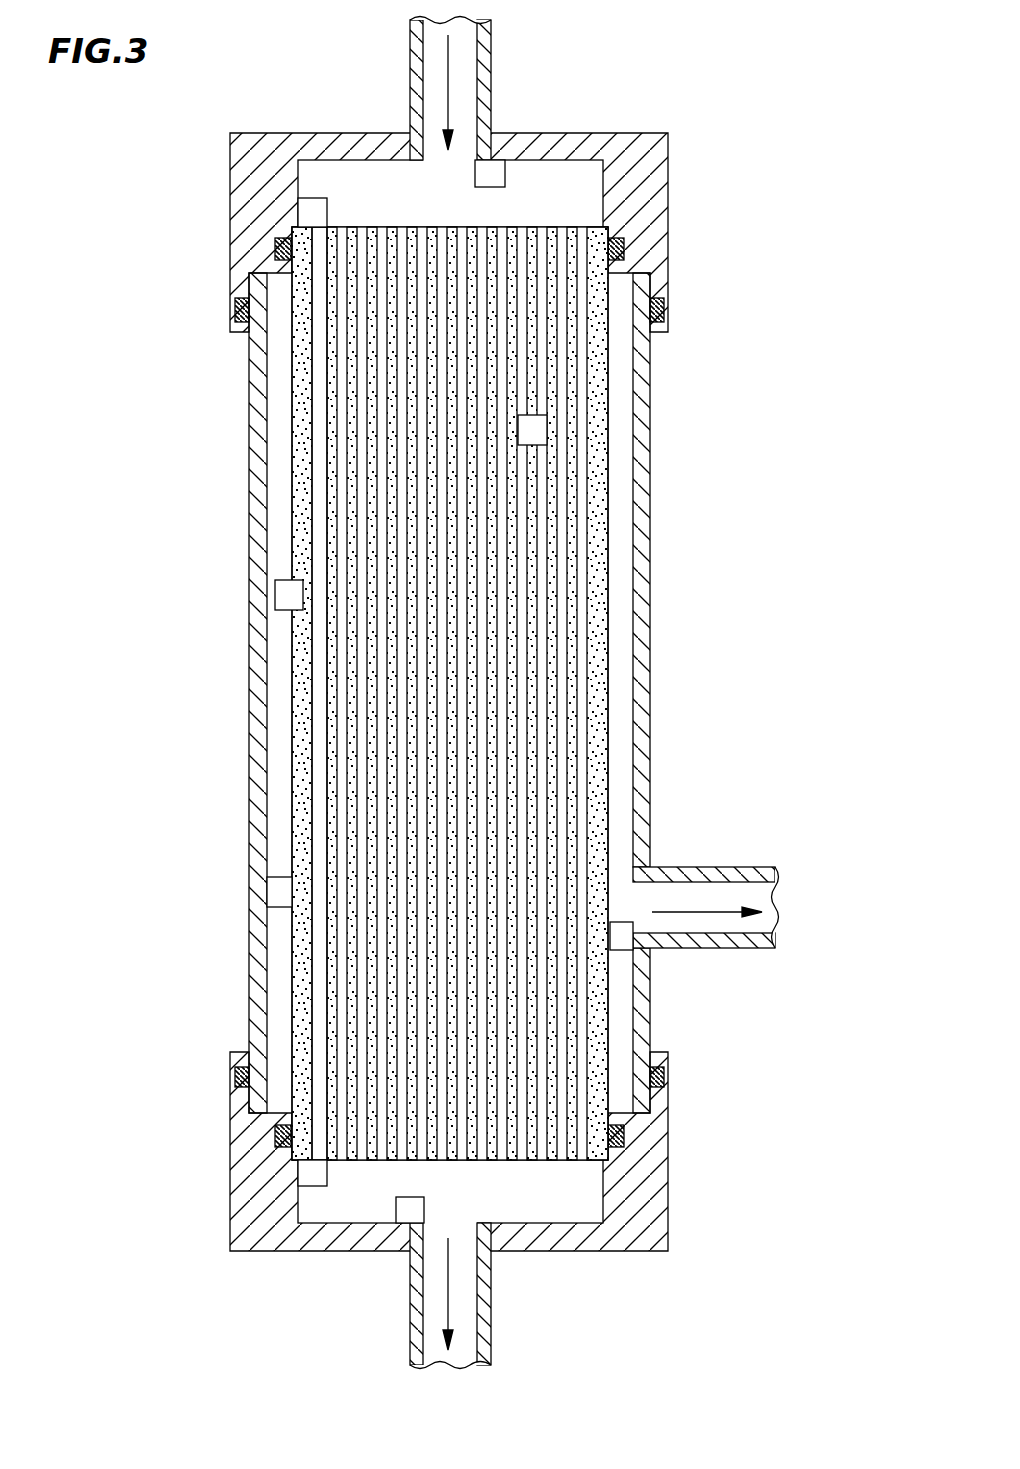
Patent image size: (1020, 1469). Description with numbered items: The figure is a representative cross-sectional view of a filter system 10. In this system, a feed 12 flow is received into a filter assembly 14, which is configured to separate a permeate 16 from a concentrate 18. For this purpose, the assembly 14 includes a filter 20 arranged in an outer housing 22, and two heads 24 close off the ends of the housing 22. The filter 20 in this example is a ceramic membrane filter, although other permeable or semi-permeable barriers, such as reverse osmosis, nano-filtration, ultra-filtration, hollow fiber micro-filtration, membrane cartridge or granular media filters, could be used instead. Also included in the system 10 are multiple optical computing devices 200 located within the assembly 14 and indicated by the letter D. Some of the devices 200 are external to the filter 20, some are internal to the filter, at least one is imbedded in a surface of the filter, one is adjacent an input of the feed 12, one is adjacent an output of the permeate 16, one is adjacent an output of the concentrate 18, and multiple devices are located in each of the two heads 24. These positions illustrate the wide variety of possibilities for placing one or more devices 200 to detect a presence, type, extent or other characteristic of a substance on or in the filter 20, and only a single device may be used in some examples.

The filter system 10 is at (757, 60).
The feed 12 is at (447, 60).
The filter assembly 14 is at (249, 722).
The permeate 16 is at (698, 910).
The concentrate 18 is at (450, 1283).
The filter 20 is at (605, 470).
The outer housing 22 is at (651, 520).
The heads 24 is at (669, 188).
The optical computing devices 200 is at (505, 173).